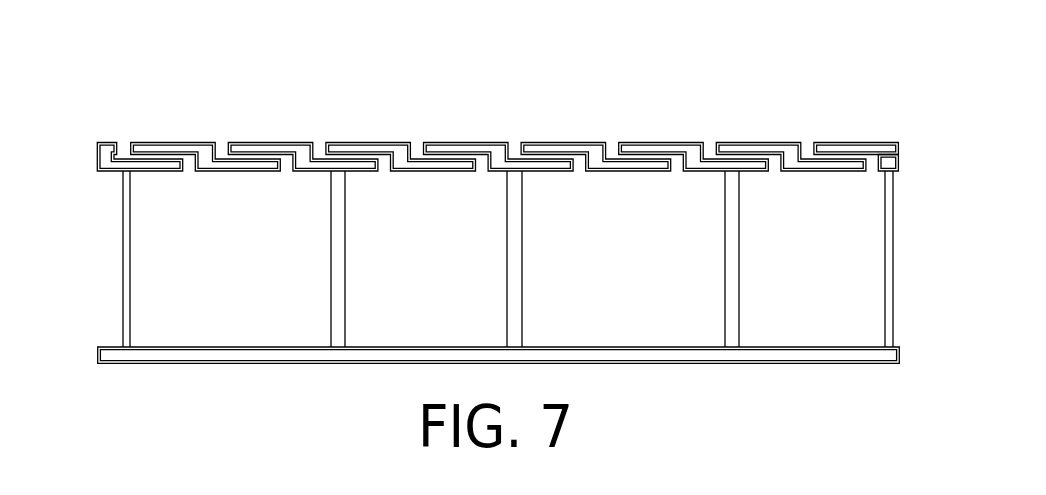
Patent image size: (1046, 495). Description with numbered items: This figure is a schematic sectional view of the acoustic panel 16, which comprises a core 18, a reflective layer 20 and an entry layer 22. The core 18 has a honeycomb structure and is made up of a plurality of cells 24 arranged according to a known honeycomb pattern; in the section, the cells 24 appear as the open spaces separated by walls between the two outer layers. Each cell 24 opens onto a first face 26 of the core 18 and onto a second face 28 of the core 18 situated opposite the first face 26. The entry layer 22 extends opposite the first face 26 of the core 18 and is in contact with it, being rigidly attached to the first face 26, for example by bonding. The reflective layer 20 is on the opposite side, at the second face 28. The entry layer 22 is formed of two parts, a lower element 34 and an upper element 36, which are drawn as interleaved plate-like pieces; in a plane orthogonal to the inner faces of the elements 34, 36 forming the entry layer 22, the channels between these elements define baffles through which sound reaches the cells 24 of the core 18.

The acoustic panel 16 is at (223, 117).
The core 18 is at (103, 262).
The reflective layer 20 is at (315, 365).
The entry layer 22 is at (669, 128).
The cell 24 is at (233, 305).
The first face 26 is at (105, 180).
The second face 28 is at (115, 337).
The lower element 34 is at (905, 167).
The upper element 36 is at (907, 143).